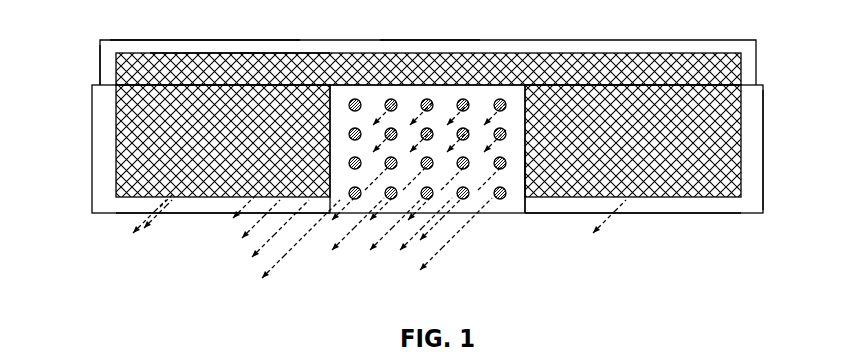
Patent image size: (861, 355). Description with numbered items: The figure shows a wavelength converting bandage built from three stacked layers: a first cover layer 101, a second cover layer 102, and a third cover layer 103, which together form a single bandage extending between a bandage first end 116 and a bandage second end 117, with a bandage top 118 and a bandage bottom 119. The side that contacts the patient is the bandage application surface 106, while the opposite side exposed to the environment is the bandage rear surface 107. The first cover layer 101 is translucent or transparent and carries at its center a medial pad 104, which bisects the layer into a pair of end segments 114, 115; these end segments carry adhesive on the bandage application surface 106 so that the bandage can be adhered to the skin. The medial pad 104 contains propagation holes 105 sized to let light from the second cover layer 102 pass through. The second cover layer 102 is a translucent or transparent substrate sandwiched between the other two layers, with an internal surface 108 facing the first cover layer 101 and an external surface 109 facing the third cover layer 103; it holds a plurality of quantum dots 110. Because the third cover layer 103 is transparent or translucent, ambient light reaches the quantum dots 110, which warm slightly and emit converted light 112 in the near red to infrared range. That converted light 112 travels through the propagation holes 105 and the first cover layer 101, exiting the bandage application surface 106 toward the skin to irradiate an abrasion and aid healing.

The first cover layer 101 is at (722, 213).
The second cover layer 102 is at (741, 72).
The third cover layer 103 is at (690, 40).
The medial pad 104 is at (519, 98).
The propagation holes 105 is at (467, 100).
The bandage application surface 106 is at (94, 170).
The bandage rear surface 107 is at (116, 40).
The internal surface 108 is at (281, 62).
The external surface 109 is at (190, 53).
The quantum dots 110 is at (583, 90).
The converted light 112 is at (142, 227).
The end segment 114 is at (668, 213).
The end segment 115 is at (197, 207).
The bandage first end 116 is at (757, 85).
The bandage second end 117 is at (100, 70).
The bandage top 118 is at (413, 83).
The bandage bottom 119 is at (527, 213).